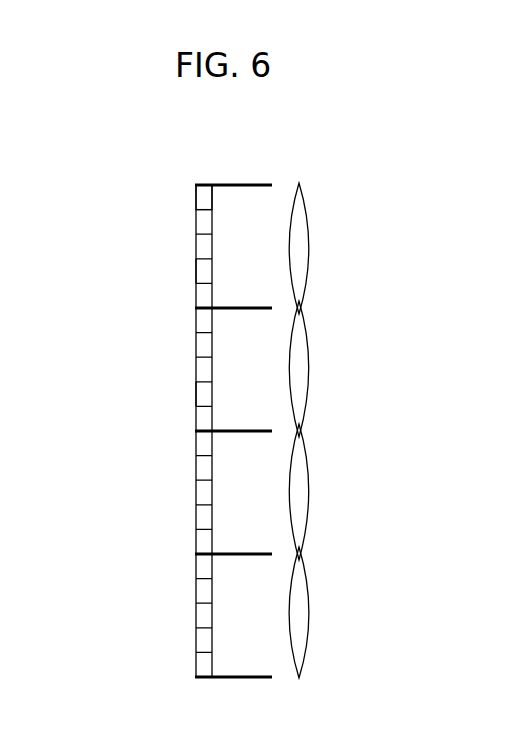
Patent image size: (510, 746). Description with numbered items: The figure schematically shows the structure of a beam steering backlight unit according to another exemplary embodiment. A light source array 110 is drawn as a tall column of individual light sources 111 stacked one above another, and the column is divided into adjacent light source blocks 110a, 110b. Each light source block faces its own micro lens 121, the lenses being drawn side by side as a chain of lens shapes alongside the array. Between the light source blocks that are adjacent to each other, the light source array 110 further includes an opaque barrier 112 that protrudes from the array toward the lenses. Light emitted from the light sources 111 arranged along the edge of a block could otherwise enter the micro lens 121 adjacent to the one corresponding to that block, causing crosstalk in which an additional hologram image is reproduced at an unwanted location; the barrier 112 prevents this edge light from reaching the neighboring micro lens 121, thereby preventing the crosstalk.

The light source array 110 is at (197, 184).
The light source 111 is at (200, 198).
The light source block 110a is at (196, 272).
The light source block 110b is at (196, 394).
The opaque barrier 112 is at (242, 679).
The micro lens 121 is at (299, 183).